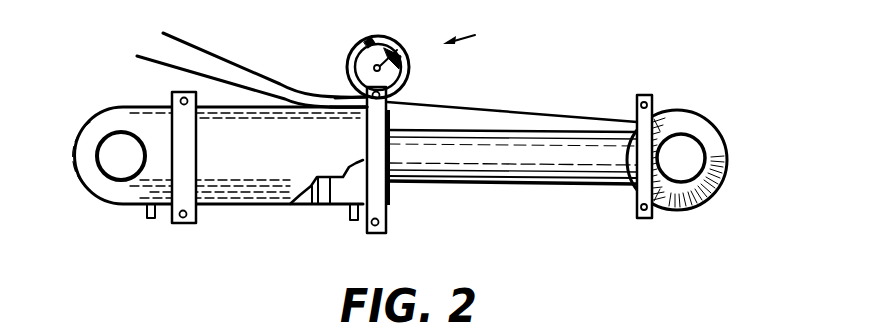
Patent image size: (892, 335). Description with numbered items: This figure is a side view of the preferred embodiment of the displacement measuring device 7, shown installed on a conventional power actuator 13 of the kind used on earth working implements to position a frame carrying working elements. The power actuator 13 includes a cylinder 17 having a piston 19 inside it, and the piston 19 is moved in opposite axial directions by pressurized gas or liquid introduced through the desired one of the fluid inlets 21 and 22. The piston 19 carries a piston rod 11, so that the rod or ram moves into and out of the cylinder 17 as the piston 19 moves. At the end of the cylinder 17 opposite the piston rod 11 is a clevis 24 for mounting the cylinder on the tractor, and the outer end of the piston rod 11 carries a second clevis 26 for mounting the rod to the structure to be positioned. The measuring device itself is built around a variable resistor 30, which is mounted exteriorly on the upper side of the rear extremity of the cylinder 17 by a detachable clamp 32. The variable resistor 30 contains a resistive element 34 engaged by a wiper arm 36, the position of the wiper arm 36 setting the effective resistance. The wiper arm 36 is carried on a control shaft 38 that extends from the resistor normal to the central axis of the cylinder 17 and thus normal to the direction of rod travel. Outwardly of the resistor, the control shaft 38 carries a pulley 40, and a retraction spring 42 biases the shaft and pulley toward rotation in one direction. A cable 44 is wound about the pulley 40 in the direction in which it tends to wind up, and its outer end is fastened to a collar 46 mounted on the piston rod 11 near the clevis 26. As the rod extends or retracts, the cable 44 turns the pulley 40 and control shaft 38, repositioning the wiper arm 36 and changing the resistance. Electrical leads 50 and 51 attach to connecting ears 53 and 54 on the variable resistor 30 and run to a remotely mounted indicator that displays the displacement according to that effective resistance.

The measuring device 7 is at (466, 35).
The piston rod 11 is at (545, 183).
The power actuator 13 is at (303, 198).
The cylinder 17 is at (257, 206).
The piston 19 is at (328, 206).
The fluid inlet 21 is at (147, 220).
The fluid inlet 22 is at (358, 222).
The clevis 24 is at (113, 150).
The clevis 26 is at (702, 140).
The variable resistor 30 is at (388, 97).
The clamp 32 is at (381, 197).
The resistive element 34 is at (352, 52).
The wiper arm 36 is at (371, 43).
The control shaft 38 is at (410, 70).
The pulley 40 is at (417, 88).
The retraction spring 42 is at (397, 50).
The cable 44 is at (560, 113).
The collar 46 is at (655, 107).
The electrical lead 50 is at (190, 44).
The electrical lead 51 is at (165, 64).
The connecting ear 53 is at (352, 108).
The connecting ear 54 is at (367, 103).